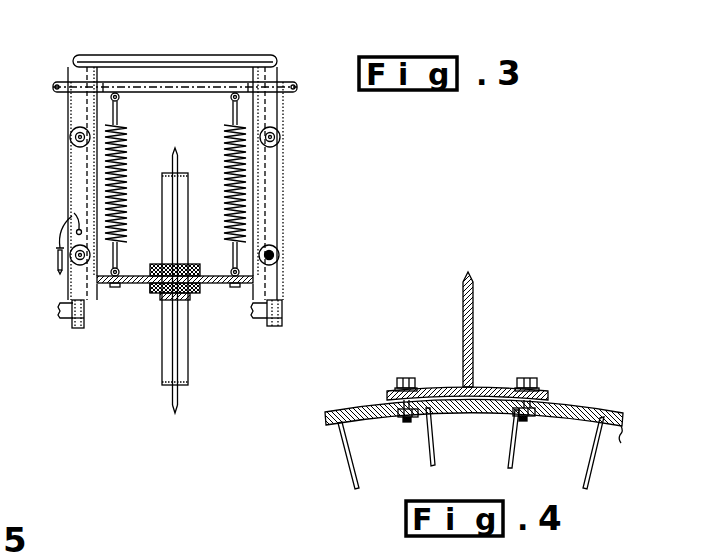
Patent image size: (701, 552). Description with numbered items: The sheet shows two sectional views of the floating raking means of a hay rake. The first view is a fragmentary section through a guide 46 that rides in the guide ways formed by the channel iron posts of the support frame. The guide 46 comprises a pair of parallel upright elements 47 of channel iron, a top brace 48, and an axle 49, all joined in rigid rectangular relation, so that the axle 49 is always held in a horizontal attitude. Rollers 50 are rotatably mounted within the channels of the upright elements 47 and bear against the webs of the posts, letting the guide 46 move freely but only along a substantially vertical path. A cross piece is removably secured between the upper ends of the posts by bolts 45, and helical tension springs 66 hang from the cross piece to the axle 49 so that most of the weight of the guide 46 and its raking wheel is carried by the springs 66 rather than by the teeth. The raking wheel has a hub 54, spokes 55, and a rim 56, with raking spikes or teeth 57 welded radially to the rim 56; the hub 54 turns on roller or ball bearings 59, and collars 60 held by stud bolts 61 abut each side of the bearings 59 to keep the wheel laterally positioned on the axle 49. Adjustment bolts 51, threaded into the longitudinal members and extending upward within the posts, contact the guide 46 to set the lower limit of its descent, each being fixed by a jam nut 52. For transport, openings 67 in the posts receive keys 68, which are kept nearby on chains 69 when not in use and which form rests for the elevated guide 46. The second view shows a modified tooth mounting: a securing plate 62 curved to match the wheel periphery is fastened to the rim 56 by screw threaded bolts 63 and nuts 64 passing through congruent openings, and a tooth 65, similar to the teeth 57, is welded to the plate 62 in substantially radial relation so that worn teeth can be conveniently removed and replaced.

In FIG. 3, the guide 46 is at (236, 51).
In FIG. 3, the top brace 48 is at (143, 55).
In FIG. 3, the bolts 45 is at (55, 84).
In FIG. 3, the upright elements 47 is at (81, 112).
In FIG. 3, the rollers 50 is at (72, 144).
In FIG. 3, the helical tension springs 66 is at (242, 222).
In FIG. 3, the axle 49 is at (224, 284).
In FIG. 3, the stud bolts 61 is at (191, 268).
In FIG. 3, the roller or ball bearings 59 is at (158, 288).
In FIG. 3, the collars 60 is at (150, 290).
In FIG. 3, the hub 54 is at (166, 296).
In FIG. 3, the rim 56 is at (188, 385).
In FIG. 4, the rim 56 is at (600, 413).
In FIG. 3, the spokes 55 is at (178, 345).
In FIG. 4, the spokes 55 is at (436, 463).
In FIG. 3, the raking spikes or teeth 57 is at (177, 411).
In FIG. 3, the keys 68 is at (57, 259).
In FIG. 3, the chains 69 is at (59, 233).
In FIG. 3, the openings 67 is at (72, 212).
In FIG. 3, the jam nut 52 is at (58, 320).
In FIG. 3, the adjustment bolts 51 is at (76, 330).
In FIG. 4, the teeth 65 is at (474, 323).
In FIG. 4, the securing plate 62 is at (386, 394).
In FIG. 4, the screw threaded bolts 63 is at (395, 384).
In FIG. 4, the nuts 64 is at (404, 421).